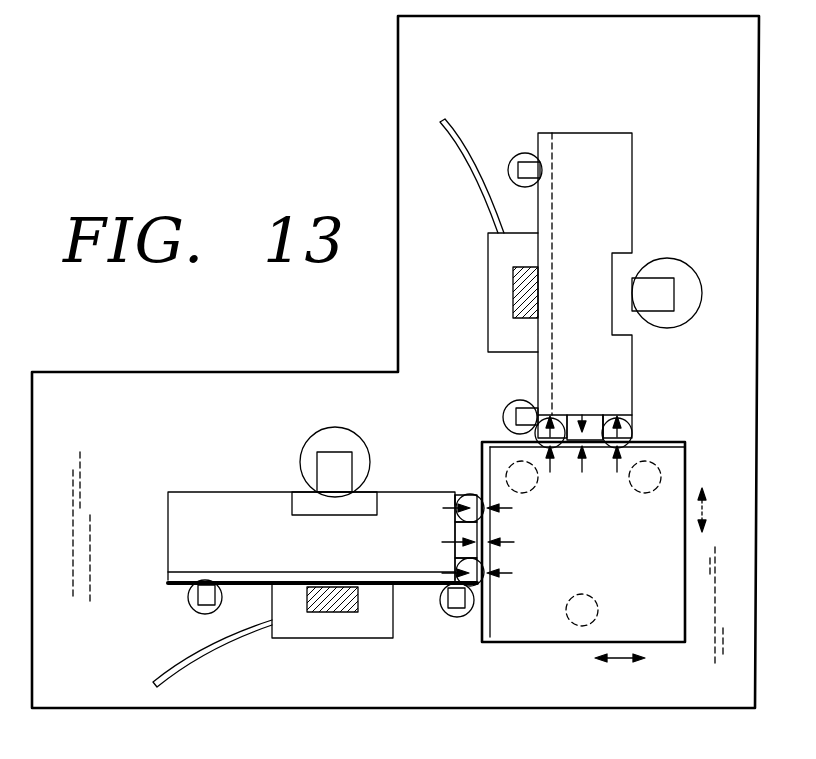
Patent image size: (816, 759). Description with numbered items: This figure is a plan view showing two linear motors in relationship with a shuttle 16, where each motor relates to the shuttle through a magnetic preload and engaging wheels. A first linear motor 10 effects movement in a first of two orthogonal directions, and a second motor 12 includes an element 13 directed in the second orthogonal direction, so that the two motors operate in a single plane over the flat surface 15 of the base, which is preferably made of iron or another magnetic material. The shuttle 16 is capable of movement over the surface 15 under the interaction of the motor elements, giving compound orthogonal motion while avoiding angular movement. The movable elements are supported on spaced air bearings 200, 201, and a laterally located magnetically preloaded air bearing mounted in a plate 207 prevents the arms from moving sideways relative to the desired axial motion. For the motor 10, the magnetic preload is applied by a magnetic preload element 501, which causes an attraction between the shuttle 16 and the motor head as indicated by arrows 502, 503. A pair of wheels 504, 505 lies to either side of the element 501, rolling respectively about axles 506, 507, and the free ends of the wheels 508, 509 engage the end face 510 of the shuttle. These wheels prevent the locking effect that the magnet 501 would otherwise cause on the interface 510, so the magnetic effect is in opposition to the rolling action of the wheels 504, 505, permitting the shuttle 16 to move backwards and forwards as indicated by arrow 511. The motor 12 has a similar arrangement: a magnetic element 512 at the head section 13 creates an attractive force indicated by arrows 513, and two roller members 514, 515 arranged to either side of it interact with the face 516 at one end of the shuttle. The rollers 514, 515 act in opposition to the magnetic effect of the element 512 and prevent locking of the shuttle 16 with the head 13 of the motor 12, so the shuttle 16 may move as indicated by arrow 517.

The first linear motor 10 is at (209, 478).
The second motor 12 is at (641, 181).
The element 13 is at (634, 430).
The flat surface 15 is at (724, 68).
The shuttle 16 is at (669, 626).
The air bearing 200 is at (668, 259).
The air bearing 201 is at (520, 153).
The plate 207 is at (487, 288).
The magnetic preload element 501 is at (448, 550).
The arrow 502 is at (512, 541).
The arrow 503 is at (448, 541).
The wheel 504 is at (468, 617).
The wheel 505 is at (470, 495).
The axle 506 is at (483, 563).
The axle 507 is at (453, 503).
The free end of wheel 508 is at (480, 586).
The free end of wheel 509 is at (443, 508).
The end face 510 is at (489, 612).
The arrow 511 is at (721, 480).
The magnetic element 512 is at (563, 414).
The arrows 513 is at (583, 413).
The roller member 514 is at (540, 412).
The roller member 515 is at (633, 412).
The face 516 is at (685, 450).
The arrow 517 is at (631, 660).